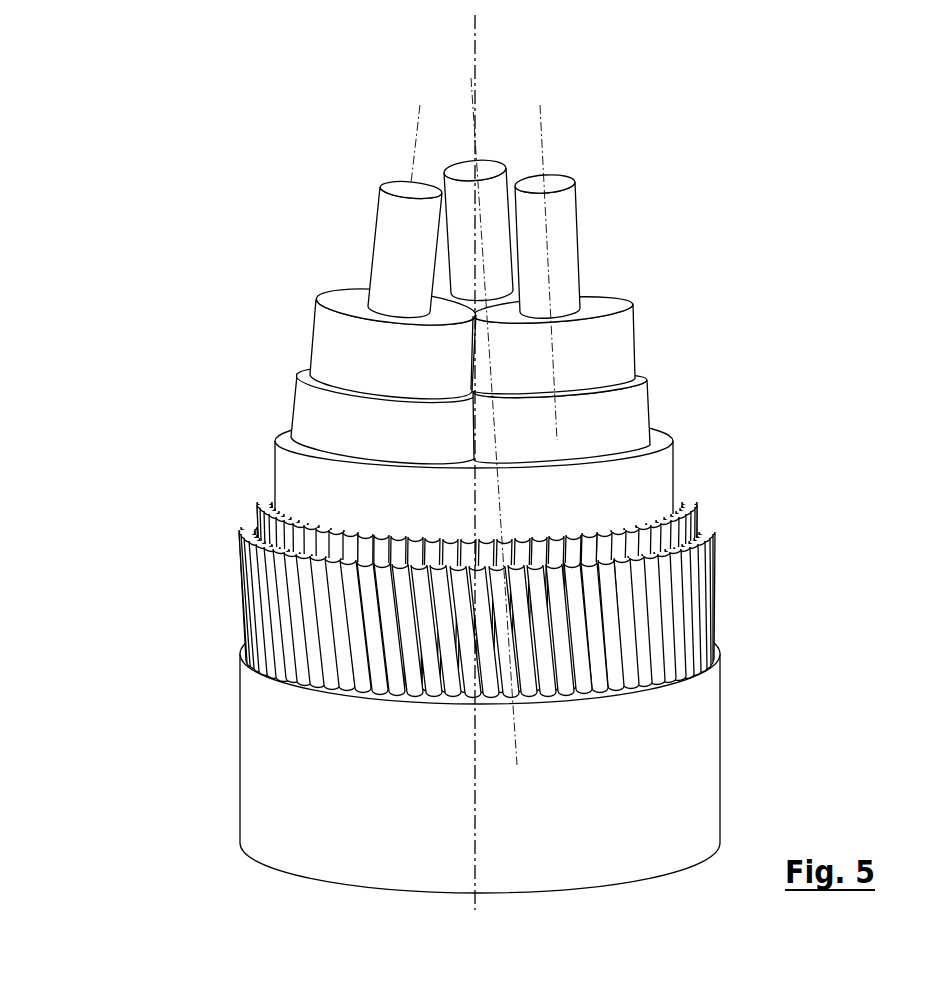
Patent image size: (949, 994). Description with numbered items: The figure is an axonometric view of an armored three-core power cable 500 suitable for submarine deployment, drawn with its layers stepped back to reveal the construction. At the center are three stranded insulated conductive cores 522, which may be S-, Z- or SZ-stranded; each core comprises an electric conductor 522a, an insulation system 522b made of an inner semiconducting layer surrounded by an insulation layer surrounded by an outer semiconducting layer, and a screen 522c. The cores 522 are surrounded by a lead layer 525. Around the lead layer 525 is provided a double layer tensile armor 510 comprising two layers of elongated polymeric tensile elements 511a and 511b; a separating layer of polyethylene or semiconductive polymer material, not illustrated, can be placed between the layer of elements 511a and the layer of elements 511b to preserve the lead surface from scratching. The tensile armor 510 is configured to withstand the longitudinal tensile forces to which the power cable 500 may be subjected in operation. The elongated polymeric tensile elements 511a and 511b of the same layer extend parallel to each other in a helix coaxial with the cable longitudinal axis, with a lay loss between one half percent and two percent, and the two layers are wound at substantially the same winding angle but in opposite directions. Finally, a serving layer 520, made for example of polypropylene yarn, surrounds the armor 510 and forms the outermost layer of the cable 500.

The armored three-core power cable 500 is at (502, 474).
The double layer tensile armor 510 is at (479, 600).
The elongated polymeric tensile elements 511a is at (273, 530).
The elongated polymeric tensile elements 511b is at (255, 583).
The serving layer 520 is at (667, 737).
The insulated conductive cores 522 is at (502, 309).
The electric conductor 522a is at (563, 203).
The insulation system 522b is at (602, 348).
The screen 522c is at (625, 415).
The lead layer 525 is at (293, 464).